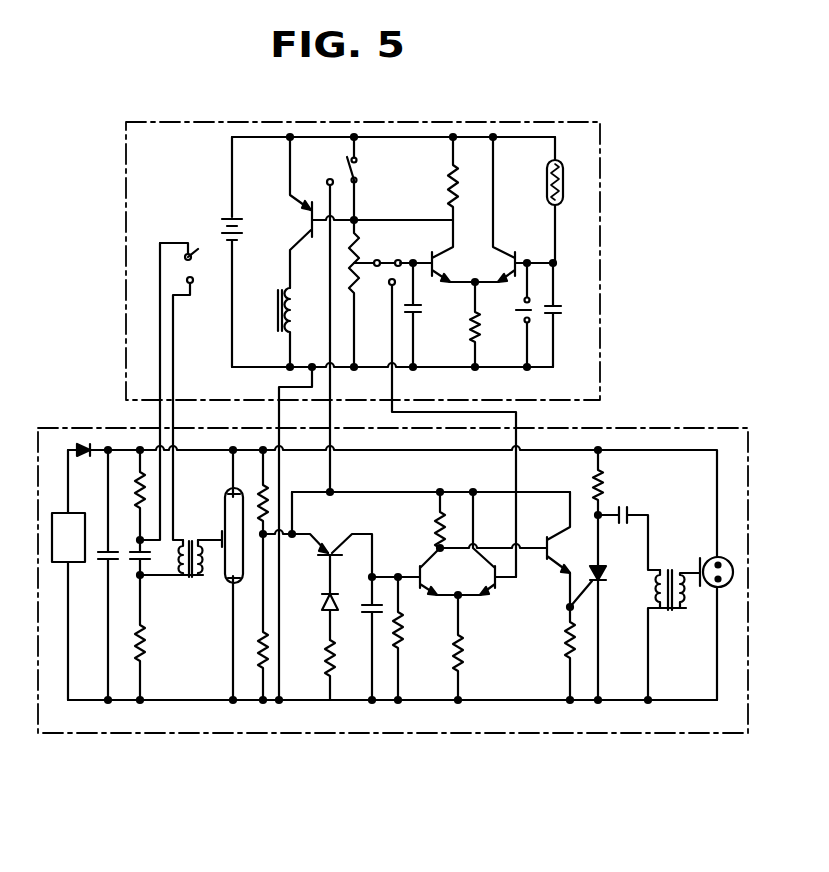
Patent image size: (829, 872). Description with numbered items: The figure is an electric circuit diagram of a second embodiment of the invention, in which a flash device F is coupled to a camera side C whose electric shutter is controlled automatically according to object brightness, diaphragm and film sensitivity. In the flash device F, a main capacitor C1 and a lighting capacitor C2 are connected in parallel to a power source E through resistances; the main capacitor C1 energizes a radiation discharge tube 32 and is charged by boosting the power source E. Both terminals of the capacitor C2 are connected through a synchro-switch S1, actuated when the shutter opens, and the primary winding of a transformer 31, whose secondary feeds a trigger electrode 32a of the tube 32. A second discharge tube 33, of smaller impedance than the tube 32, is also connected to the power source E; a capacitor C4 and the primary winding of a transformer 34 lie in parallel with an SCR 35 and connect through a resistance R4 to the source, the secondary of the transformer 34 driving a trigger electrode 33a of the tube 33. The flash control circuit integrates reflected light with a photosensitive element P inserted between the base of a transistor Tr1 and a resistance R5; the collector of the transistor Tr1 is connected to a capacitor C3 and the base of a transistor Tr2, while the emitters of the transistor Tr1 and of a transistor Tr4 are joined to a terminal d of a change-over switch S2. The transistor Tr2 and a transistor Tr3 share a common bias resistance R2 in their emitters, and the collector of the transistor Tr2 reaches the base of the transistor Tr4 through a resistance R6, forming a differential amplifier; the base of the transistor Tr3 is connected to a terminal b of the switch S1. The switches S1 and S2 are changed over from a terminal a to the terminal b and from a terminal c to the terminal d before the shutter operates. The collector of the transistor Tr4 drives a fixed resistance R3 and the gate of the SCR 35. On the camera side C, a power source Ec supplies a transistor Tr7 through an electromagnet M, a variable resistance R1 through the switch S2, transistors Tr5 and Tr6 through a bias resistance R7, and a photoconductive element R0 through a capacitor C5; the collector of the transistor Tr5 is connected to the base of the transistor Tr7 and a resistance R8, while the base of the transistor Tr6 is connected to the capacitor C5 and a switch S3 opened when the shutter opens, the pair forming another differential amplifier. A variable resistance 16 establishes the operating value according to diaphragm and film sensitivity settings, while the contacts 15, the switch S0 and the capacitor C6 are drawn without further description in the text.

The camera side C is at (600, 342).
The flash circuit block F is at (667, 427).
The transistor Tr7 is at (305, 220).
The power source Ec is at (243, 240).
The switch S0 is at (190, 268).
The electromagnet M is at (287, 312).
The terminal d is at (326, 325).
The terminal c is at (350, 166).
The change-over switch S2 is at (368, 178).
The variable resistance R1 is at (349, 256).
The variable resistance 16 is at (349, 283).
The contact 15 is at (392, 290).
The synchro-switch S1 is at (377, 260).
The terminal a is at (399, 260).
The terminal b is at (445, 425).
The transistor Tr5 is at (432, 256).
The resistance R8 is at (464, 183).
The transistor Tr6 is at (516, 256).
The capacitor C6 is at (426, 315).
The bias resistance R7 is at (475, 328).
The switch S3 is at (531, 316).
The capacitor C5 is at (568, 315).
The photoconductive element R0 is at (563, 185).
The power source E is at (68, 575).
The main capacitor C1 is at (103, 562).
The lighting capacitor C2 is at (163, 566).
The transformer 31 is at (194, 576).
The trigger electrode 32a is at (221, 535).
The radiation discharge tube 32 is at (225, 585).
The transistor Tr1 is at (327, 545).
The photosensitive element P is at (321, 603).
The resistance R5 is at (334, 660).
The capacitor C3 is at (364, 638).
The resistance R6 is at (436, 532).
The transistor Tr2 is at (420, 590).
The transistor Tr3 is at (495, 590).
The common bias resistance R2 is at (462, 650).
The transistor Tr4 is at (547, 540).
The fixed resistance R3 is at (566, 642).
The resistance R4 is at (618, 492).
The capacitor C4 is at (622, 505).
The SCR 35 is at (620, 573).
The second discharge tube 33 is at (722, 557).
The trigger electrode 33a is at (698, 563).
The transformer 34 is at (680, 612).